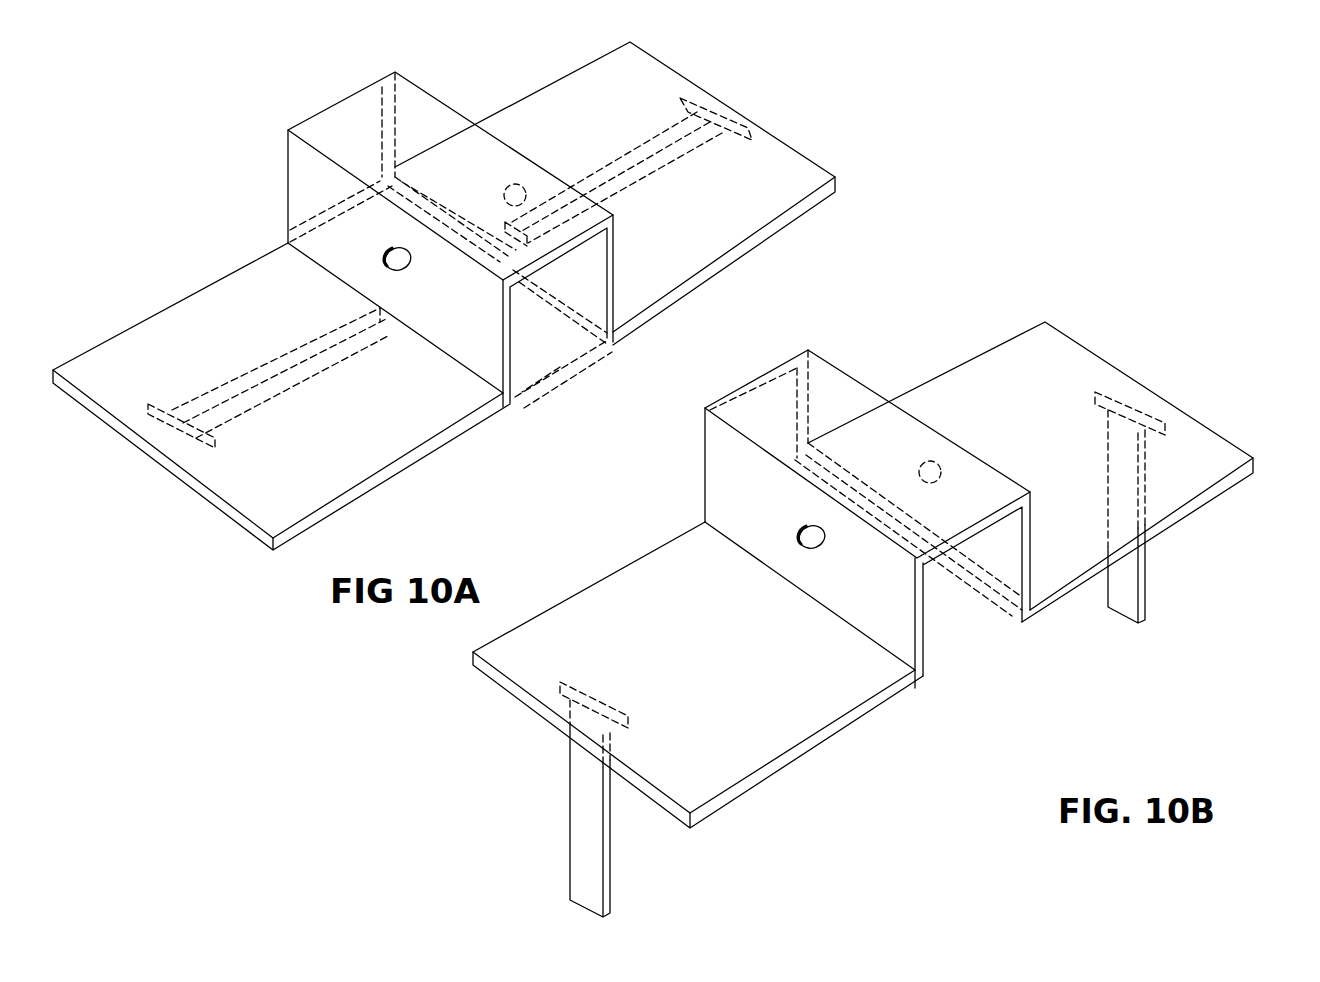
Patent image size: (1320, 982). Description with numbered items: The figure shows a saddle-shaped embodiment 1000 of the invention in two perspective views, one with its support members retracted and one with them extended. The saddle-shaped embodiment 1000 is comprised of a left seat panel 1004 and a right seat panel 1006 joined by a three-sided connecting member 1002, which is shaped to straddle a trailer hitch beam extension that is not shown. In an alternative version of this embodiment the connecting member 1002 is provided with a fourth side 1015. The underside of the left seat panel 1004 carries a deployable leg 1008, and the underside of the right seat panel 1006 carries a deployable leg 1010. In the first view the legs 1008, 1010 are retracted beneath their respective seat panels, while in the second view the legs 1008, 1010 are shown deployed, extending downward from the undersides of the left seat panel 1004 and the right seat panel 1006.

In FIG. 10A, the saddle-shaped embodiment 1000 is at (227, 246).
In FIG. 10B, the saddle-shaped embodiment 1000 is at (643, 527).
In FIG. 10A, the three-sided connecting member 1002 is at (285, 183).
In FIG. 10B, the three-sided connecting member 1002 is at (702, 468).
In FIG. 10A, the left seat panel 1004 is at (302, 511).
In FIG. 10B, the left seat panel 1004 is at (845, 727).
In FIG. 10A, the right seat panel 1006 is at (748, 249).
In FIG. 10B, the right seat panel 1006 is at (1162, 525).
In FIG. 10A, the deployable leg 1008 is at (227, 418).
In FIG. 10B, the deployable leg 1008 is at (585, 852).
In FIG. 10A, the deployable leg 1010 is at (672, 163).
In FIG. 10B, the deployable leg 1010 is at (1146, 597).
In FIG. 10A, the fourth side 1015 is at (546, 370).